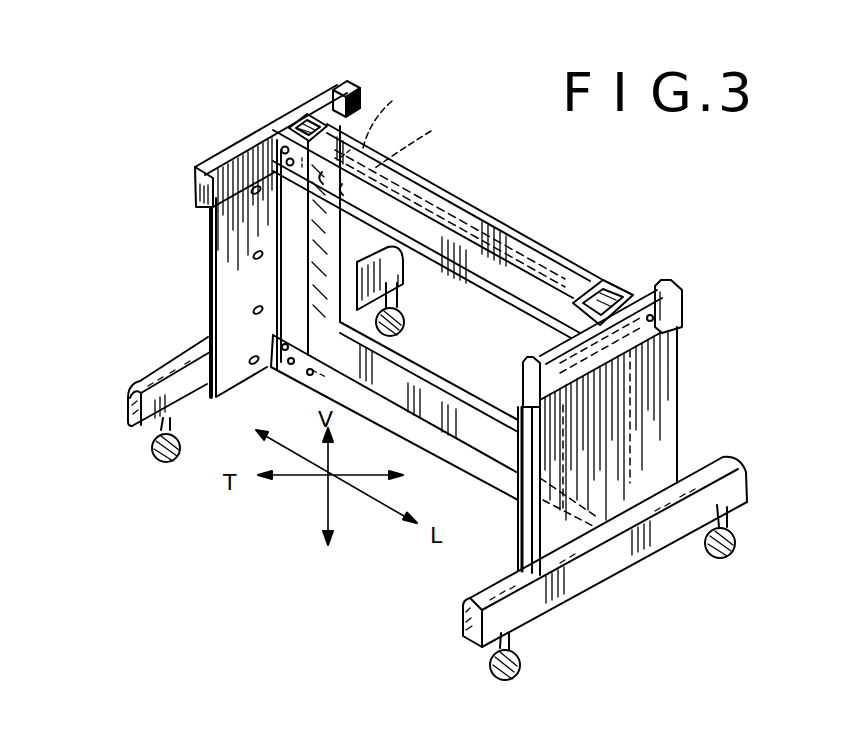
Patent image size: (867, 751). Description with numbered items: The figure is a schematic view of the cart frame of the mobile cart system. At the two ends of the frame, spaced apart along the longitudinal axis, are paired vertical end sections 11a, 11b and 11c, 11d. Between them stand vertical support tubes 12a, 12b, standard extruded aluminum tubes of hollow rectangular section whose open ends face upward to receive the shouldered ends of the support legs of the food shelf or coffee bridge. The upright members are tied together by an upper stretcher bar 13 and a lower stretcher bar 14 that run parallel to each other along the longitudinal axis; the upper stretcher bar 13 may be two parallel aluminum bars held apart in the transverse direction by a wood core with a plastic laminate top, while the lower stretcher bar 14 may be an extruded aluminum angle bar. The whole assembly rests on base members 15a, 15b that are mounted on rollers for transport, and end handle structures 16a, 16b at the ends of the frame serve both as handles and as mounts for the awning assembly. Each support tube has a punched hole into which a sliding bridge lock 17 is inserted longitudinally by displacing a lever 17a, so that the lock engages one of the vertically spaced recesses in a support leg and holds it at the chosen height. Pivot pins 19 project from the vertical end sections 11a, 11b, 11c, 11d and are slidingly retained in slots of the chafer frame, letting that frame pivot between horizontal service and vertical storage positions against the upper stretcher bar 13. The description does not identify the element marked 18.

The vertical end section 11a is at (210, 238).
The vertical end section 11b is at (333, 88).
The vertical end section 11c is at (517, 547).
The vertical end section 11d is at (657, 397).
The vertical support tube 12a is at (303, 125).
The vertical support tube 12b is at (580, 285).
The upper stretcher bar 13 is at (467, 222).
The lower stretcher bar 14 is at (403, 400).
The base member 15a is at (130, 413).
The base member 15b is at (523, 610).
The end handle structure 16a is at (197, 166).
The end handle structure 16b is at (667, 303).
The sliding bridge lock 17 is at (284, 222).
The lever 17a is at (424, 137).
The fastener bolt 18 is at (382, 118).
The pivot pin 19 is at (253, 310).